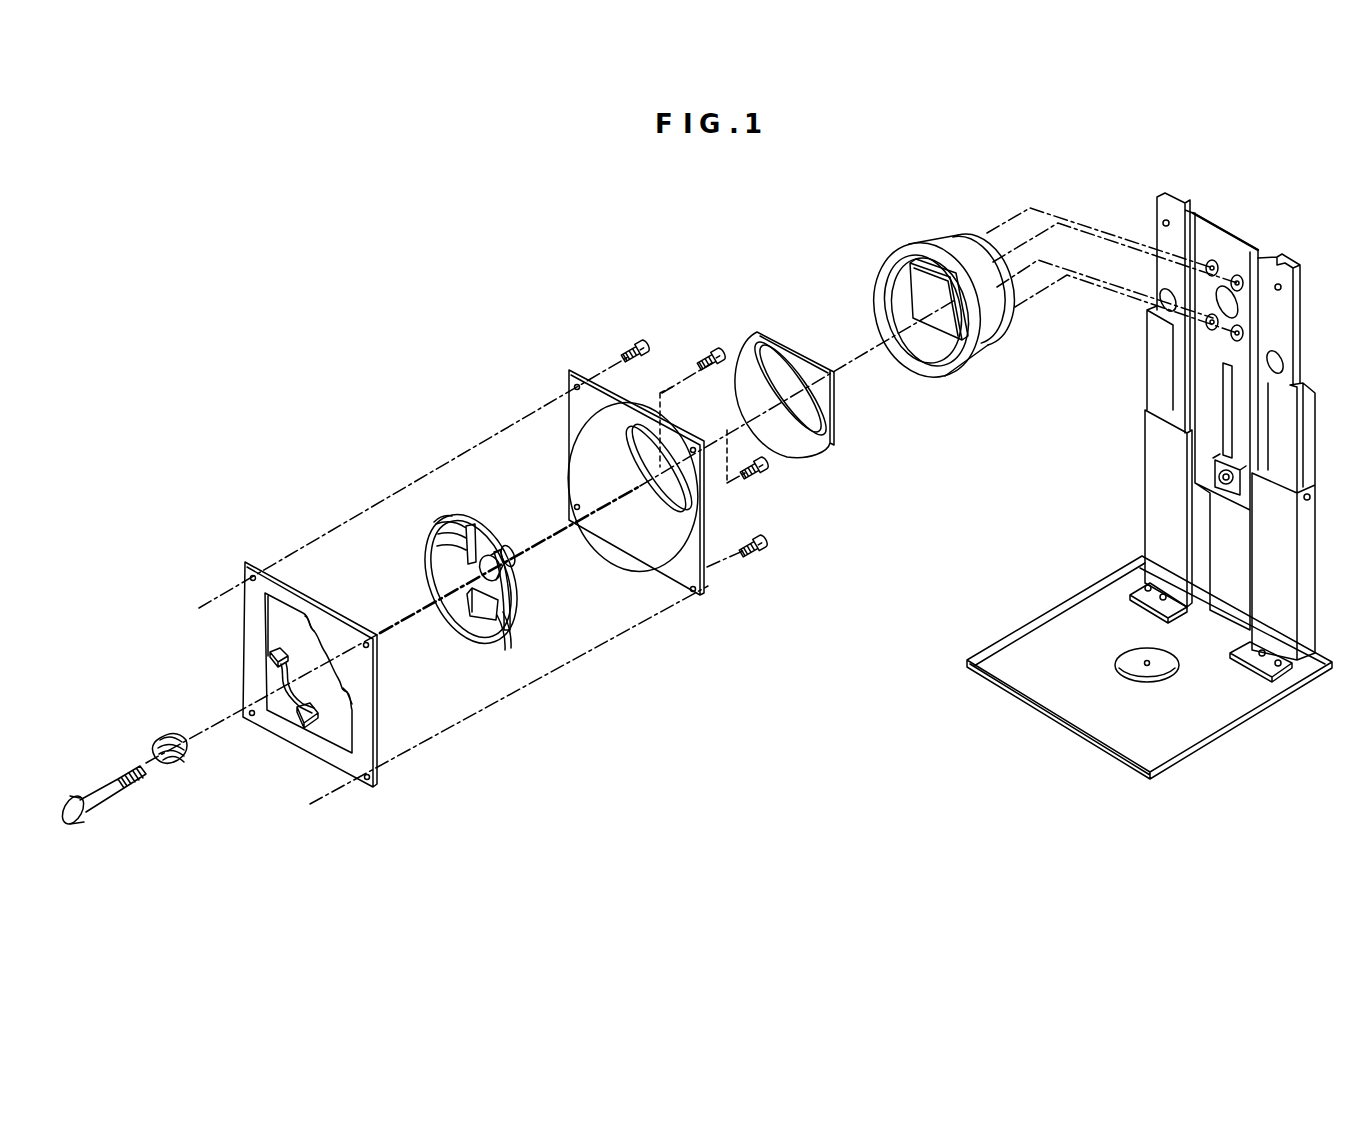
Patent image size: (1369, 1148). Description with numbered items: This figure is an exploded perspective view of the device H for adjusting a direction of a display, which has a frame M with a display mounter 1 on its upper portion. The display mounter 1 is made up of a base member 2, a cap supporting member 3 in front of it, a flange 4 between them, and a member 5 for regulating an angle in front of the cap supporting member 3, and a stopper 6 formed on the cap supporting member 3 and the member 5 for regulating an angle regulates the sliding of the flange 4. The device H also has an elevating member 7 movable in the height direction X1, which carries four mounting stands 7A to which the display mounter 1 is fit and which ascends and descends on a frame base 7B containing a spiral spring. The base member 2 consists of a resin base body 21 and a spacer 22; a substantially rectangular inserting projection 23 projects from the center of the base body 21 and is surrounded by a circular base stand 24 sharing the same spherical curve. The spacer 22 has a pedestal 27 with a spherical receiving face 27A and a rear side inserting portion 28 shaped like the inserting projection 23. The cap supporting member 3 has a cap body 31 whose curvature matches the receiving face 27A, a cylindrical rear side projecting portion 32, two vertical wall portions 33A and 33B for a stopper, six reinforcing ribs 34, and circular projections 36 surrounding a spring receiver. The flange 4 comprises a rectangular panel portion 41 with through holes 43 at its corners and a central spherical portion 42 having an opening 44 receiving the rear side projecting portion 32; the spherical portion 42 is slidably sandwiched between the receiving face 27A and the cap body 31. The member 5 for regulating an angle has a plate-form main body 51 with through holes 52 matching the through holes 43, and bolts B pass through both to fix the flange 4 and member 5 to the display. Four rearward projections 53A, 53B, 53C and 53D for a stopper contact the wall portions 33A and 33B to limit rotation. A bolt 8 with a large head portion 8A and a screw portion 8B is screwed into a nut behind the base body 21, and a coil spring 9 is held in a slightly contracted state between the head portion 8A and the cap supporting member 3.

The display mounter 1 is at (948, 214).
The base member 2 is at (909, 348).
The cap supporting member 3 is at (475, 575).
The flange 4 is at (653, 498).
The member for regulating an angle 5 is at (311, 646).
The stopper 6 is at (311, 640).
The elevating member 7 is at (1207, 393).
The mounting stands 7A is at (1218, 252).
The frame base 7B is at (1152, 505).
The bolt 8 is at (122, 841).
The head portion 8A is at (78, 826).
The screw portion 8B is at (134, 790).
The coil spring 9 is at (155, 740).
The base body 21 is at (976, 383).
The spacer 22 is at (899, 330).
The inserting projection 23 is at (897, 290).
The base stand 24 is at (898, 258).
The pedestal 27 is at (794, 394).
The receiving face 27A is at (810, 455).
The rear side inserting portion 28 is at (823, 375).
The cap body 31 is at (440, 518).
The rear side projecting portion 32 is at (514, 560).
The wall portion for a stopper 33A is at (478, 540).
The wall portion for a stopper 33B is at (478, 610).
The reinforcing ribs 34 is at (440, 547).
The projections 36 is at (522, 580).
The panel portion 41 is at (710, 567).
The spherical portion 42 is at (688, 526).
The through holes 43 is at (579, 382).
The opening 44 is at (644, 416).
The plate-form main body 51 is at (362, 723).
The through holes 52 is at (250, 577).
The projection for a stopper 53A is at (272, 650).
The projection for a stopper 53B is at (304, 714).
The projection for a stopper 53C is at (345, 697).
The projection for a stopper 53D is at (300, 610).
The bolts B is at (637, 345).
The device for adjusting a direction of a display H is at (555, 272).
The height direction X1 is at (1316, 334).
The frame M is at (1324, 364).